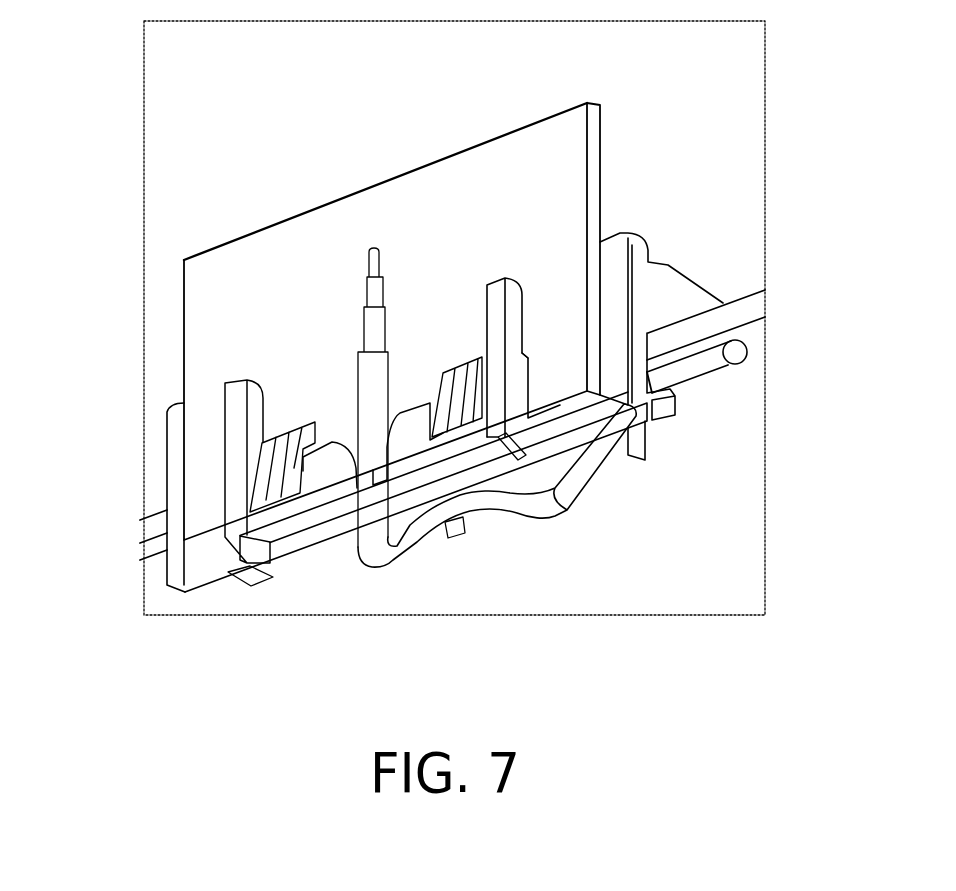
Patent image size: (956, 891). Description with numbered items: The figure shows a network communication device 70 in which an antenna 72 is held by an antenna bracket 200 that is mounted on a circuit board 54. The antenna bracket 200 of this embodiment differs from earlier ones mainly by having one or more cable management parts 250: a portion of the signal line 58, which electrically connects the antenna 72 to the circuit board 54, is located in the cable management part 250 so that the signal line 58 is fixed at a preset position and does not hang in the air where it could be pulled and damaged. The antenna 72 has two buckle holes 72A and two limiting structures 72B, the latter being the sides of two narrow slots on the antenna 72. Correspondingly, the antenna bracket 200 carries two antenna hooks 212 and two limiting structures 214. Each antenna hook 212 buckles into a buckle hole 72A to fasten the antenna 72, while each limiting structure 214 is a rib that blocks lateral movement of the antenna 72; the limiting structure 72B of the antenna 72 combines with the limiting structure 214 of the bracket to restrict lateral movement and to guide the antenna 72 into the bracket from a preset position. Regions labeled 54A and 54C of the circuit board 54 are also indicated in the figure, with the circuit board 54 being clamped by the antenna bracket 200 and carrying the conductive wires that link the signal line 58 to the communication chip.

The network communication device 70 is at (31, 363).
The antenna 72 is at (597, 143).
The buckle hole 72A is at (468, 348).
The limiting structure 72B is at (537, 365).
The antenna hook 212 is at (457, 393).
The limiting structure 214 is at (542, 388).
The antenna bracket 200 is at (675, 292).
The upper surface of guide rail 54A is at (750, 302).
The circuit board 54 is at (750, 516).
The side surface of guide rail 54C is at (723, 457).
The signal line 58 is at (706, 368).
The cable management part 250 is at (653, 422).